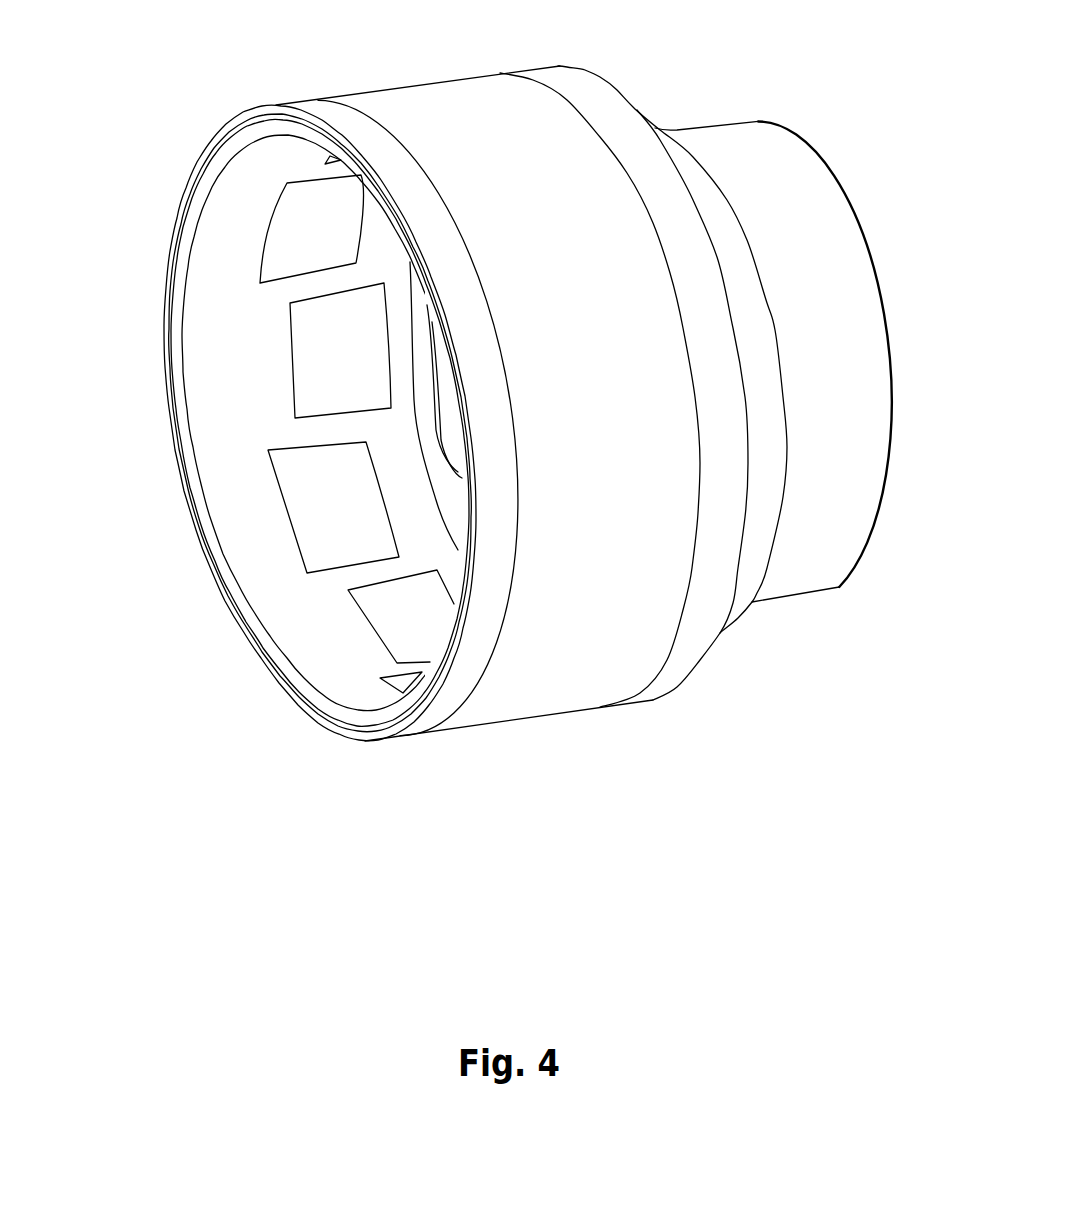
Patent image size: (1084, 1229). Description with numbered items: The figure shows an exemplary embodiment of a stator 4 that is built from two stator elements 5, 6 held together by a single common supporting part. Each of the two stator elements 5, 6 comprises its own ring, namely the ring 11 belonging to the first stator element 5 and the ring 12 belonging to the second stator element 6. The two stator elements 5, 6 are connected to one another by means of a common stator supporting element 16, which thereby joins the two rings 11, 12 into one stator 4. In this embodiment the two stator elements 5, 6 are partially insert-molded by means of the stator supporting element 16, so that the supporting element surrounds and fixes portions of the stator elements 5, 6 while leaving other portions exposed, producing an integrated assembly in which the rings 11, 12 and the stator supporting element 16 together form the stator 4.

The stator 4 is at (739, 717).
The stator element 5 is at (228, 367).
The stator element 6 is at (400, 492).
The ring 11 is at (434, 714).
The ring 12 is at (661, 680).
The stator supporting element 16 is at (543, 698).